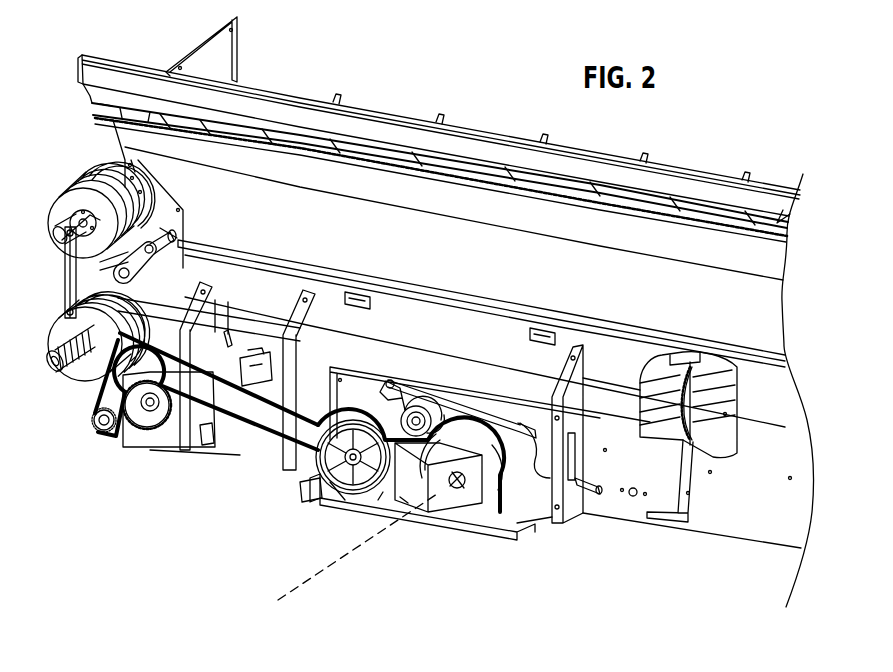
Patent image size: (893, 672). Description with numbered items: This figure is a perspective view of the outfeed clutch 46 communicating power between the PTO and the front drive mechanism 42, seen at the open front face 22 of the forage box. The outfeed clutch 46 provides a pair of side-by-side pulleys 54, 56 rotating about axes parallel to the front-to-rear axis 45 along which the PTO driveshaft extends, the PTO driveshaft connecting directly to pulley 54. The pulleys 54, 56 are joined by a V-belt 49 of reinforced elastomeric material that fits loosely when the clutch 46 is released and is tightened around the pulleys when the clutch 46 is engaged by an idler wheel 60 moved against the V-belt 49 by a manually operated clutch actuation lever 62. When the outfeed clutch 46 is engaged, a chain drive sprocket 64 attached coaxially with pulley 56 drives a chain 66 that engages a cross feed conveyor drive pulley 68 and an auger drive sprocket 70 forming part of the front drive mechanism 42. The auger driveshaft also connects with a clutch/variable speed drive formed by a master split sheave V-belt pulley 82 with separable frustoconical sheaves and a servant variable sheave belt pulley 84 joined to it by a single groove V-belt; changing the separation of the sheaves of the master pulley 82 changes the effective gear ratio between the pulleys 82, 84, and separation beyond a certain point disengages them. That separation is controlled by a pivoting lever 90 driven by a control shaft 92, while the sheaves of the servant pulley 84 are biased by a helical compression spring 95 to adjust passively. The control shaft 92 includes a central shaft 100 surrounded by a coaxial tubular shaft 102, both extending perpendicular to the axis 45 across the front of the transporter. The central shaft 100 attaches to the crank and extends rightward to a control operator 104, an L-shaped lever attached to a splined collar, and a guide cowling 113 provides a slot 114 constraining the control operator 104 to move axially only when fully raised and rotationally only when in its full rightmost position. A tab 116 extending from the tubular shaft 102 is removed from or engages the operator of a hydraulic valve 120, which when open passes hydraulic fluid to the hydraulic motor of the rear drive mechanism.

The front face 22 is at (732, 582).
The front drive mechanism 42 is at (62, 152).
The front-to-rear axis 45 is at (330, 566).
The outfeed clutch 46 is at (656, 578).
The V-belt 49 is at (398, 412).
The pulley 54 is at (485, 520).
The pulley 56 is at (300, 483).
The idler wheel 60 is at (428, 406).
The clutch actuation lever 62 is at (583, 508).
The chain drive sprocket 64 is at (368, 483).
The chain 66 is at (238, 453).
The cross feed conveyor drive pulley 68 is at (157, 422).
The auger drive sprocket 70 is at (48, 383).
The master split sheave V-belt pulley 82 is at (50, 213).
The servant variable sheave belt pulley 84 is at (82, 378).
The pivoting lever 90 is at (62, 275).
The control shaft 92 is at (360, 328).
The helical compression spring 95 is at (50, 364).
The central shaft 100 is at (182, 280).
The tubular shaft 102 is at (500, 368).
The control operator 104 is at (657, 515).
The guide cowling 113 is at (703, 396).
The slot 114 is at (713, 430).
The tab 116 is at (228, 346).
The hydraulic valve 120 is at (274, 362).